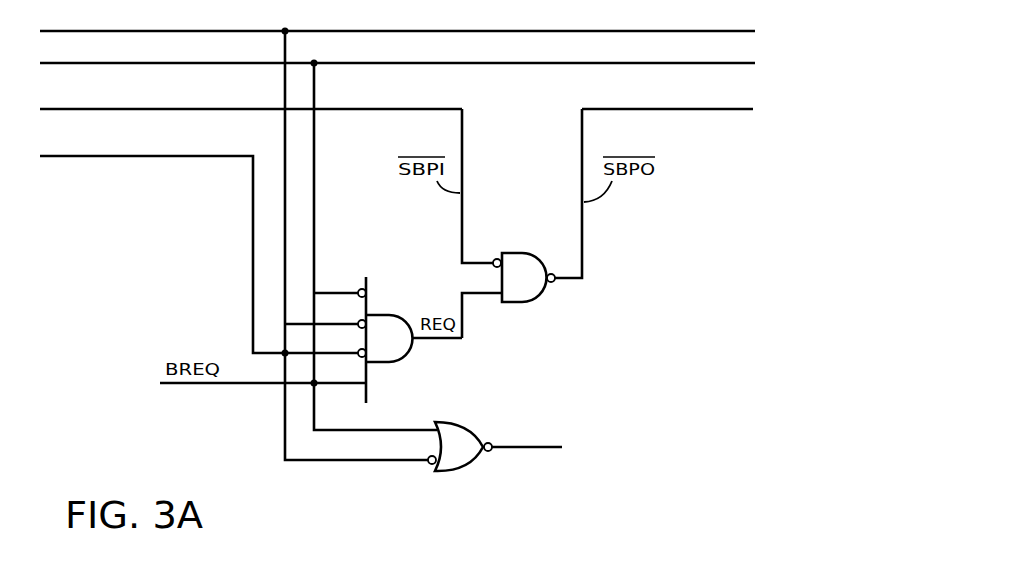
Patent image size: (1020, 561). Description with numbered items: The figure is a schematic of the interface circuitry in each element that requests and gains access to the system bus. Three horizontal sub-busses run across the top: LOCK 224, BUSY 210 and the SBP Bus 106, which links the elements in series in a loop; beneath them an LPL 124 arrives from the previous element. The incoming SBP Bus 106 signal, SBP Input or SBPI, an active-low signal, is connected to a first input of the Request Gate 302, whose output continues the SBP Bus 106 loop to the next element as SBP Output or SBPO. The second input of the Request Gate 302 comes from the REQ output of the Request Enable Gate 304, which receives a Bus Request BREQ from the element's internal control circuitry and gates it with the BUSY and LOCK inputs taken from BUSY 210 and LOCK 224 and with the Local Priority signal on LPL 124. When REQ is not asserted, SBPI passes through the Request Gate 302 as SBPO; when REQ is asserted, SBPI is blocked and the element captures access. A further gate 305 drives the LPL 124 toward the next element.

The LOCK 224 is at (225, 28).
The BUSY 210 is at (213, 62).
The SBP Bus 106 is at (248, 107).
The LPL 124 is at (200, 155).
The Request Gate 302 is at (525, 303).
The Request Enable Gate 304 is at (396, 363).
The LPG lock propagate gate 305 is at (472, 428).